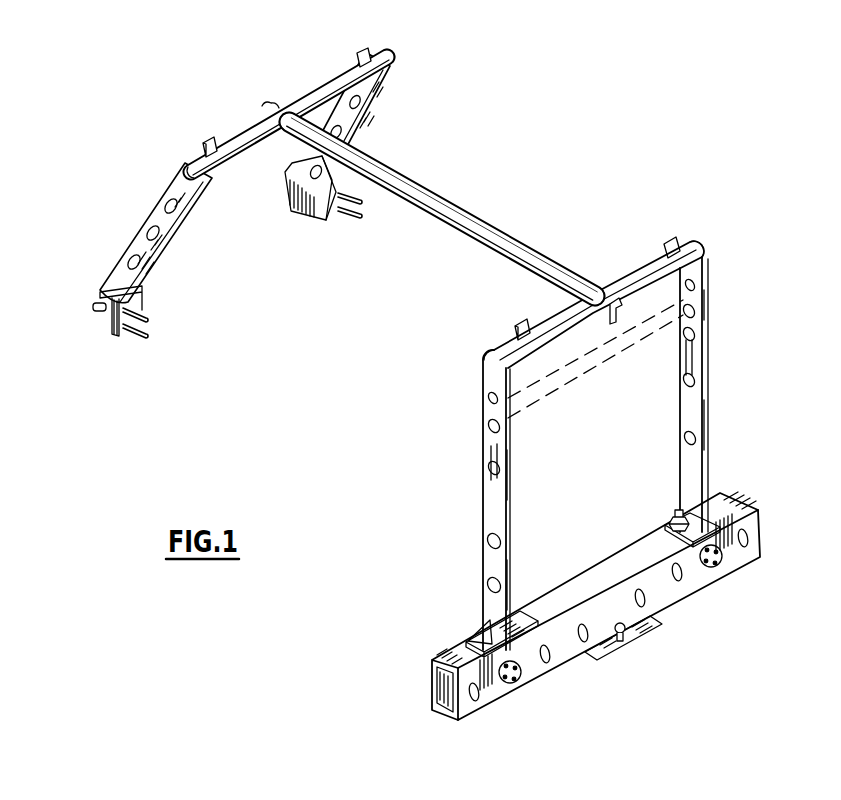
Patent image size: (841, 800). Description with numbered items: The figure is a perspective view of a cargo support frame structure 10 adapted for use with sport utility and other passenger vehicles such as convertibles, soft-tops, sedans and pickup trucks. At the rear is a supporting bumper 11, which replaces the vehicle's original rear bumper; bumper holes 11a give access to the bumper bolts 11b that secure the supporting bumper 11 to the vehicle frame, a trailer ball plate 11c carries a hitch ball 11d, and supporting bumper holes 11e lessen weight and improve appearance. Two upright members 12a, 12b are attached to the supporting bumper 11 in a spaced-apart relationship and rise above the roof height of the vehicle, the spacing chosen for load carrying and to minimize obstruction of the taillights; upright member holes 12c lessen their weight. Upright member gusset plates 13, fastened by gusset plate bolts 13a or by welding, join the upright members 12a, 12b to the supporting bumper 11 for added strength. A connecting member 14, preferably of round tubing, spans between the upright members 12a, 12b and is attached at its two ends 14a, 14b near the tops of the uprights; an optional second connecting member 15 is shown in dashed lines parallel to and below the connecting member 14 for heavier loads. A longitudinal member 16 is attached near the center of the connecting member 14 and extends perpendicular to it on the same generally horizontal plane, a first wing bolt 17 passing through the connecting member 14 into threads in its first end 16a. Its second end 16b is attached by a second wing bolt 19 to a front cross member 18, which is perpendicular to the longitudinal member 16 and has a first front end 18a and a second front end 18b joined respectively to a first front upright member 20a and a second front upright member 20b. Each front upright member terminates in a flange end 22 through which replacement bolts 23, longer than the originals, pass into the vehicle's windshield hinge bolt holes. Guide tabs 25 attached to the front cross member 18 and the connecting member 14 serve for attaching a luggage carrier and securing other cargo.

The cargo support frame structure 10 is at (490, 140).
The supporting bumper 11 is at (563, 668).
The bumper holes 11a is at (717, 567).
The bumper bolts 11b is at (709, 569).
The trailer ball plate 11c is at (609, 645).
The hitch ball 11d is at (637, 645).
The supporting bumper holes 11e is at (638, 590).
The upright member 12a is at (509, 477).
The upright member 12b is at (708, 395).
The upright member holes 12c is at (686, 431).
The upright member gusset plates 13 is at (476, 637).
The gusset plate bolts 13a is at (668, 518).
The connecting member 14 is at (648, 258).
The end of connecting member 14a is at (485, 355).
The end of connecting member 14b is at (699, 250).
The second connecting member 15 is at (551, 403).
The longitudinal member 16 is at (434, 194).
The first end of longitudinal member 16a is at (592, 288).
The second end of longitudinal member 16b is at (286, 133).
The first wing bolt 17 is at (612, 324).
The front cross member 18 is at (313, 90).
The first front end 18a is at (198, 182).
The second front end 18b is at (382, 52).
The second wing bolt 19 is at (279, 106).
The first front upright member 20a is at (150, 221).
The second front upright member 20b is at (365, 114).
The flange end 22 is at (122, 336).
The replacement bolts 23 is at (95, 306).
The guide tabs 25 is at (358, 54).